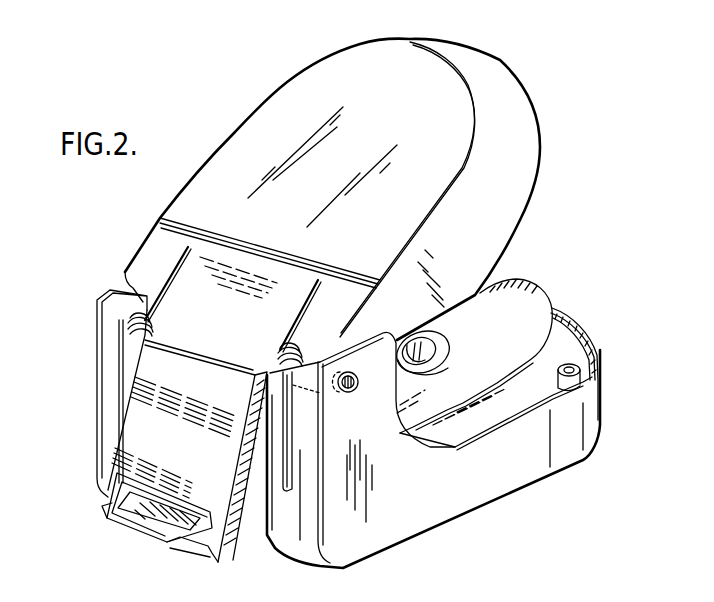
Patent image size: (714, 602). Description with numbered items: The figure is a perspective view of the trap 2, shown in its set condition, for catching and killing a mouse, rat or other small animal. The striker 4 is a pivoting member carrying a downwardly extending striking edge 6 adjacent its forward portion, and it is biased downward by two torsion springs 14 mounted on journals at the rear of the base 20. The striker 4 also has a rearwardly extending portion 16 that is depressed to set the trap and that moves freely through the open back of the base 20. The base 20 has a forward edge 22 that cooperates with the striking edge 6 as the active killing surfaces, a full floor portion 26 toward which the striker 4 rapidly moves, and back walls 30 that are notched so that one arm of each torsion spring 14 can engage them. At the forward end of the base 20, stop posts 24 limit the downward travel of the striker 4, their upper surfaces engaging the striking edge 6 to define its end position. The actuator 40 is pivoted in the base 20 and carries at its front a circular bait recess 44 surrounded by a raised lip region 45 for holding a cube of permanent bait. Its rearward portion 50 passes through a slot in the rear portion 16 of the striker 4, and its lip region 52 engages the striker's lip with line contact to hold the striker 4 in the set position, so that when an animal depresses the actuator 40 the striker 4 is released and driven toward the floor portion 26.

The trap 2 is at (198, 110).
The striker 4 is at (347, 80).
The striking edge 6 is at (497, 88).
The torsion springs 14 is at (125, 320).
The rearwardly extending portion 16 is at (203, 467).
The base 20 is at (533, 462).
The forward edge 22 is at (576, 323).
The stop posts 24 is at (577, 364).
The floor portion 26 is at (477, 423).
The back walls 30 is at (278, 450).
The actuator 40 is at (537, 274).
The bait recess 44 is at (405, 346).
The raised lip region 45 is at (443, 352).
The rearward portion of the actuator 50 is at (143, 510).
The lip region of the actuator 52 is at (178, 540).